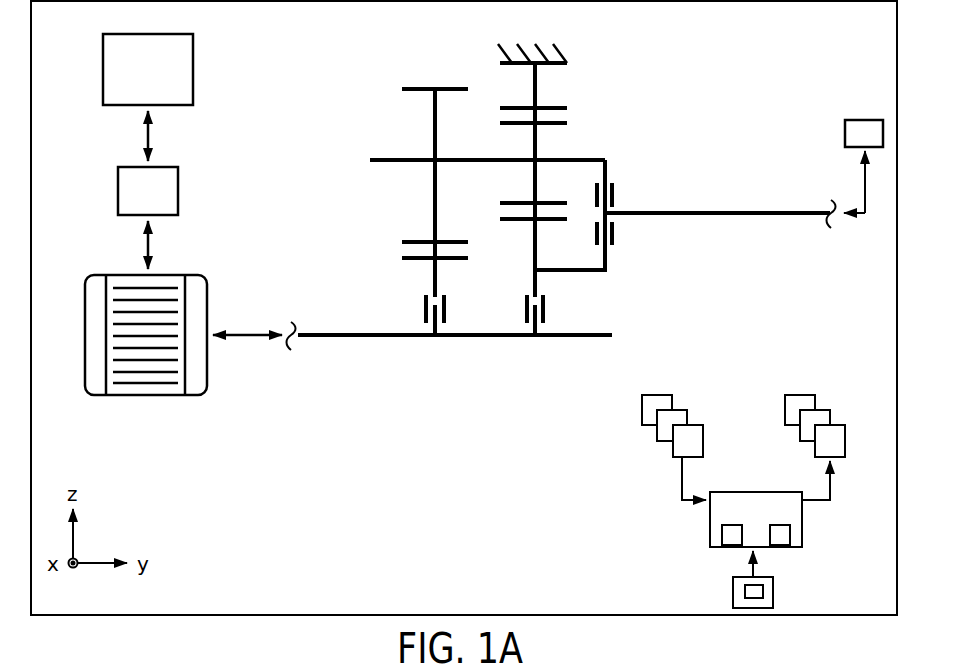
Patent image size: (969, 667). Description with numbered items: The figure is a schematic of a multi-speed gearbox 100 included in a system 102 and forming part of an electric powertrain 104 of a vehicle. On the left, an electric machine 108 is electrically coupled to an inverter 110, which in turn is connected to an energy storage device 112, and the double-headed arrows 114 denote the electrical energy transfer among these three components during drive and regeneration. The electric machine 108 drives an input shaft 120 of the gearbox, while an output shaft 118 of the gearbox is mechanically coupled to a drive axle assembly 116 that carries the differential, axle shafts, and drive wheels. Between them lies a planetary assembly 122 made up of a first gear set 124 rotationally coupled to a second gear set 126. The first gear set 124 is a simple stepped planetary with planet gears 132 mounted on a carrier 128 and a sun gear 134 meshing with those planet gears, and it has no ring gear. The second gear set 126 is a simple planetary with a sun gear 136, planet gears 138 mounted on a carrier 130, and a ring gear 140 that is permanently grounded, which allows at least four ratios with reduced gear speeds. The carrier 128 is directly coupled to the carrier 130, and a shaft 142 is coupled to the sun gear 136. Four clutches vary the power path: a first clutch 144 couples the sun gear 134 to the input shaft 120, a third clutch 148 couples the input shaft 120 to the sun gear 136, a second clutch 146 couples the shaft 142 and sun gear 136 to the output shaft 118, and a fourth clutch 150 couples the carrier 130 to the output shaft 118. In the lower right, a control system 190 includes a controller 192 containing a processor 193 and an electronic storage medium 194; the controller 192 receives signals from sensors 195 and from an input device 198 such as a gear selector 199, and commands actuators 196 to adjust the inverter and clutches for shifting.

The multi-speed gearbox 100 is at (714, 122).
The system 102 is at (780, 80).
The powertrain 104 is at (845, 45).
The electric machine 108 is at (85, 315).
The inverter 110 is at (178, 188).
The energy storage device 112 is at (193, 45).
The arrows 114 is at (150, 245).
The drive axle assemblies 116 is at (845, 132).
The output shaft 118 is at (770, 211).
The input shaft 120 is at (363, 333).
The planetary assembly 122 is at (329, 82).
The first gear set 124 is at (420, 42).
The second gear set 126 is at (486, 42).
The carrier 128 is at (410, 160).
The carrier 130 is at (522, 163).
The planet gears 132 is at (415, 89).
The sun gear 134 is at (402, 258).
The sun gear 136 is at (500, 218).
The planet gears 138 is at (563, 118).
The ring gear 140 is at (500, 112).
The shaft 142 is at (570, 270).
The first clutch 144 is at (407, 313).
The second clutch 146 is at (627, 237).
The third clutch 148 is at (517, 310).
The fourth clutch 150 is at (625, 194).
The control system 190 is at (736, 479).
The controller 192 is at (769, 521).
The processor 193 is at (790, 535).
The electronic storage medium 194 is at (722, 535).
The sensors 195 is at (632, 392).
The actuators 196 is at (770, 392).
The input device 198 is at (772, 580).
The gear selector 199 is at (763, 591).